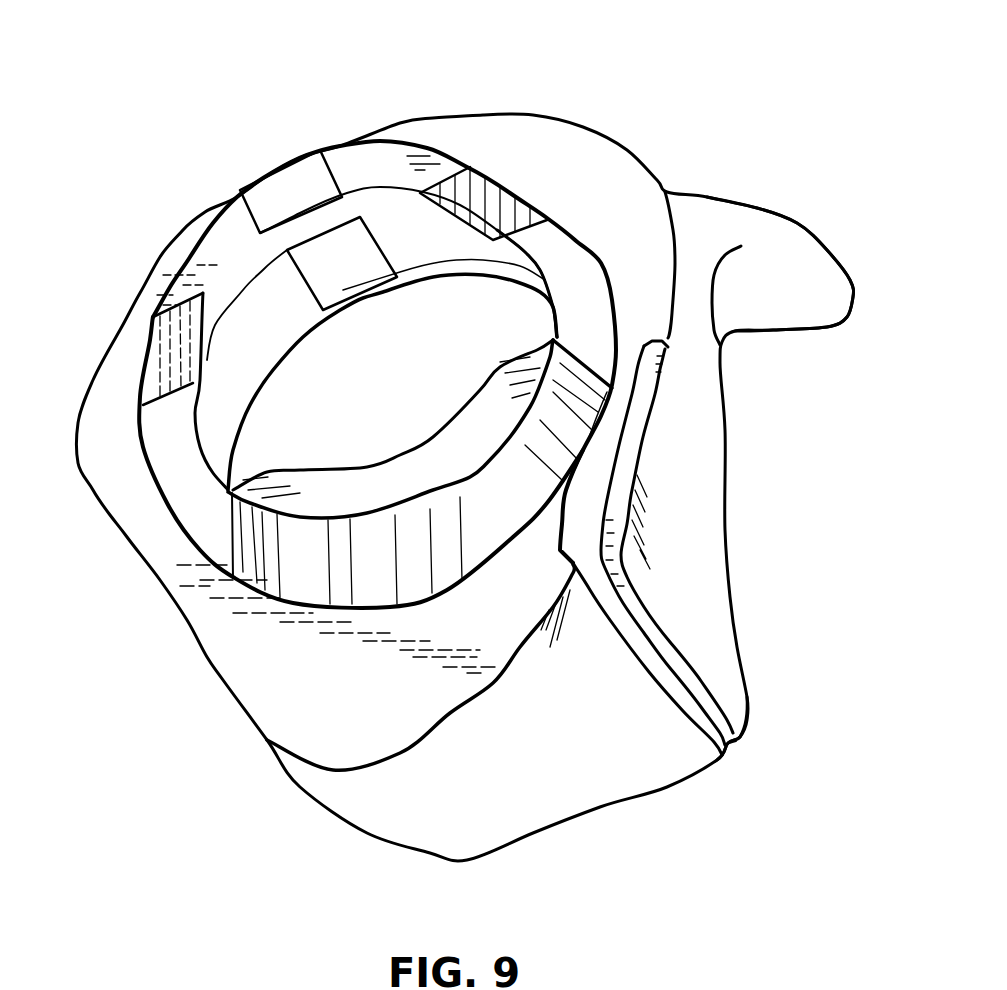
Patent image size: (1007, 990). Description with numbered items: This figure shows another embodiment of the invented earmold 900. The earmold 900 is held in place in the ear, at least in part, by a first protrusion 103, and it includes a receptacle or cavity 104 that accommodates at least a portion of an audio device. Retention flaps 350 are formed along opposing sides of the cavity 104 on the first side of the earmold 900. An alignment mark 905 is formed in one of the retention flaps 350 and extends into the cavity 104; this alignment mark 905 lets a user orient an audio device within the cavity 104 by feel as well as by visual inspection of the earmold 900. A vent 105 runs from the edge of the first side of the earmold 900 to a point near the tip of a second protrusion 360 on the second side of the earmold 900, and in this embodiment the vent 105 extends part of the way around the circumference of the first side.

The earmold 900 is at (757, 499).
The first protrusion 103 is at (800, 230).
The cavity 104 is at (322, 360).
The vent 105 is at (637, 640).
The retention flaps 350 is at (420, 146).
The second protrusion 360 is at (748, 697).
The alignment mark 905 is at (290, 168).